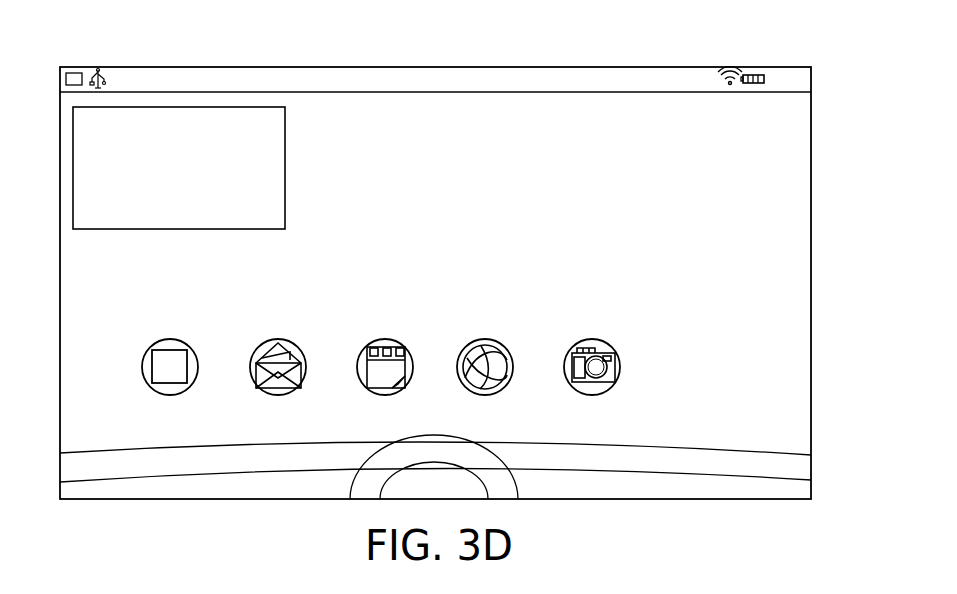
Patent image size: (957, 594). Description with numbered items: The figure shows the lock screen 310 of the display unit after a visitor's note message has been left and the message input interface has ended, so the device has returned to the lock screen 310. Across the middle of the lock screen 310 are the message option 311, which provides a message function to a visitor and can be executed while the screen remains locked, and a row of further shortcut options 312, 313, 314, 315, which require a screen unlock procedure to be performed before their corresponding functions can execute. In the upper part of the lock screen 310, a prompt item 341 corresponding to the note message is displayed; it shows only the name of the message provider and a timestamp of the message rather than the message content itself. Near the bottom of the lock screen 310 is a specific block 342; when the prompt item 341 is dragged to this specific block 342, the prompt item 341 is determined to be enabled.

The lock screen 310 is at (772, 48).
The message option 311 is at (170, 339).
The shortcut option 312 is at (278, 339).
The shortcut option 313 is at (387, 339).
The shortcut option 314 is at (486, 339).
The shortcut option 315 is at (592, 339).
The prompt item 341 is at (177, 107).
The specific block 342 is at (333, 481).